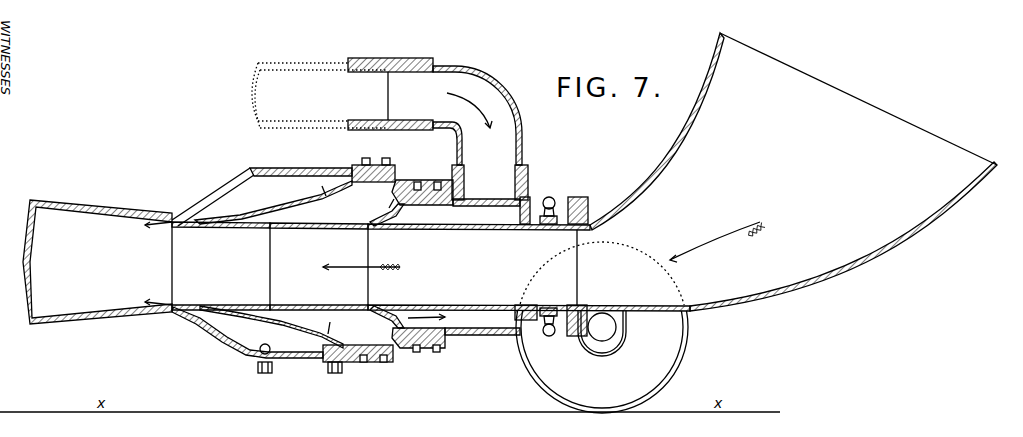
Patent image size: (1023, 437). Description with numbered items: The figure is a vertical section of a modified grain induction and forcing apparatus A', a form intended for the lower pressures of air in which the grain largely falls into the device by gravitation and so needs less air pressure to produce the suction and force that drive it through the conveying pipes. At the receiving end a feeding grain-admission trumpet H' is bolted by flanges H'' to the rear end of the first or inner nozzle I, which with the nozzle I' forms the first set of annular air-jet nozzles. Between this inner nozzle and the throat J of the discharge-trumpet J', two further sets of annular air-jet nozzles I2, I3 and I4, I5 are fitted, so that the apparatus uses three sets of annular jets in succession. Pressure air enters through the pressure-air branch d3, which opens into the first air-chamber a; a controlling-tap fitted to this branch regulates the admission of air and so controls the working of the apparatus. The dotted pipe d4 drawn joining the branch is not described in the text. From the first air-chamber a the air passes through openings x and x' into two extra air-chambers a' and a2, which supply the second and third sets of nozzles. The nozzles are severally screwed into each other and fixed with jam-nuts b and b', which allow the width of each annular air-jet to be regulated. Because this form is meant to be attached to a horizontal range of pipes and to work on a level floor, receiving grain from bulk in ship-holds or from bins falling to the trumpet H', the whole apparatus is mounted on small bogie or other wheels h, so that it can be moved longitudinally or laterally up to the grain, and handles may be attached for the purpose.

The grain induction and forcing apparatus A' is at (254, 269).
The discharge-trumpet J' is at (97, 262).
The throat of discharge-trumpet J is at (167, 264).
The annular air-jet nozzle I5 is at (158, 263).
The annular air-jet nozzle I4 is at (221, 266).
The annular air-jet nozzle I3 is at (251, 239).
The annular air-jet nozzle I2 is at (319, 266).
The annular air-jet nozzle I' is at (357, 239).
The first or inner nozzle I is at (506, 267).
The extra air-chamber a2 is at (325, 193).
The extra air-chamber a' is at (374, 263).
The first air-chamber a is at (463, 266).
The opening x' is at (322, 253).
The opening x is at (415, 252).
The jam-nut b is at (431, 263).
The jam-nut b' is at (468, 263).
The pressure-air branch d3 is at (438, 129).
The supply pipe d4 is at (320, 95).
The flanges H'' is at (578, 258).
The feeding grain-admission trumpet H' is at (793, 172).
The bogie wheels h is at (602, 327).